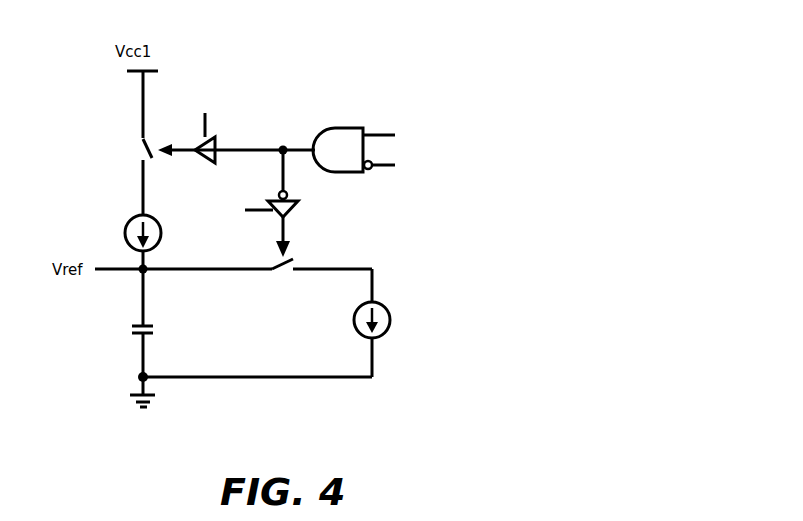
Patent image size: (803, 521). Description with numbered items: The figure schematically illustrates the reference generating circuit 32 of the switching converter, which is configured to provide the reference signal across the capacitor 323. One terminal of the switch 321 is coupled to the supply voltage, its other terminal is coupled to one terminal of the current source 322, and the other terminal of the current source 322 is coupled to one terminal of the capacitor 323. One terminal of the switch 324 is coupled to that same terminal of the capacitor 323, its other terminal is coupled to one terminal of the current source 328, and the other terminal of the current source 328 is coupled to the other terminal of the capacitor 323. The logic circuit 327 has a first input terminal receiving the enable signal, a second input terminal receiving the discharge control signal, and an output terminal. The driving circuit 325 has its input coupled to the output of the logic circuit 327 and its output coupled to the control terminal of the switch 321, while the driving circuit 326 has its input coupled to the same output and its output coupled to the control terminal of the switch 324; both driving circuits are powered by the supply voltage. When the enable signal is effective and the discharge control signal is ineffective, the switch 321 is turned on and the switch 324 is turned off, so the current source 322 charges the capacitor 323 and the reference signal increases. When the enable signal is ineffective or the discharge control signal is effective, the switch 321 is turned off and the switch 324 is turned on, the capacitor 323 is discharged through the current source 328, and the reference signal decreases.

The reference generating circuit 32 is at (477, 62).
The switch 321 is at (137, 152).
The current source 322 is at (121, 233).
The capacitor 323 is at (128, 329).
The switch 324 is at (278, 276).
The driving circuit 325 is at (219, 142).
The driving circuit 326 is at (292, 213).
The logic circuit 327 is at (333, 123).
The current source 328 is at (395, 320).